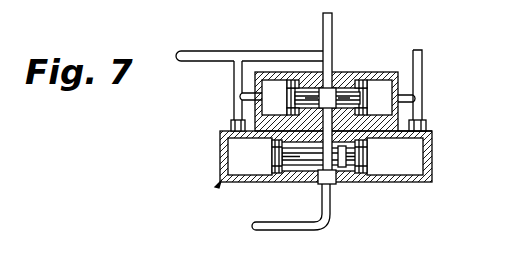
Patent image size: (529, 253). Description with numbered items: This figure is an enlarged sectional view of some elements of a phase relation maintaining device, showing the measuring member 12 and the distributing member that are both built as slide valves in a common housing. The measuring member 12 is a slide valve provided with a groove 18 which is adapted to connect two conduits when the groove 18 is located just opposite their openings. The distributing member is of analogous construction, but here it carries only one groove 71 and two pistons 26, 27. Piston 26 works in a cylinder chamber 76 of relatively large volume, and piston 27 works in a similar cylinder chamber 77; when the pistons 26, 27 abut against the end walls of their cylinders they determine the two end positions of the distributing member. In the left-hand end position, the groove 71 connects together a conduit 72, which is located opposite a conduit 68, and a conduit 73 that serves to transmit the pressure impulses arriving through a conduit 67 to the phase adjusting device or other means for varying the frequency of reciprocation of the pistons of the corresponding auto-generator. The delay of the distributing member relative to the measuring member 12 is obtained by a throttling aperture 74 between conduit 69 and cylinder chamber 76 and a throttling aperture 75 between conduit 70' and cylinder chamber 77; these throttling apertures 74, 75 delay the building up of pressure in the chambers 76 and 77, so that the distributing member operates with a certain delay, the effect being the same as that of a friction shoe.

The measuring member 12 is at (347, 84).
The groove 18 is at (348, 168).
The piston 26 is at (265, 181).
The piston 27 is at (362, 150).
The conduit 67 is at (331, 30).
The conduit 68 is at (333, 80).
The conduit 69 is at (234, 74).
The conduit 70' is at (427, 85).
The groove 71 is at (294, 182).
The conduit 72 is at (402, 120).
The conduit 73 is at (330, 200).
The throttling aperture 74 is at (233, 126).
The throttling aperture 75 is at (420, 134).
The cylinder chamber 76 is at (236, 152).
The cylinder chamber 77 is at (416, 153).